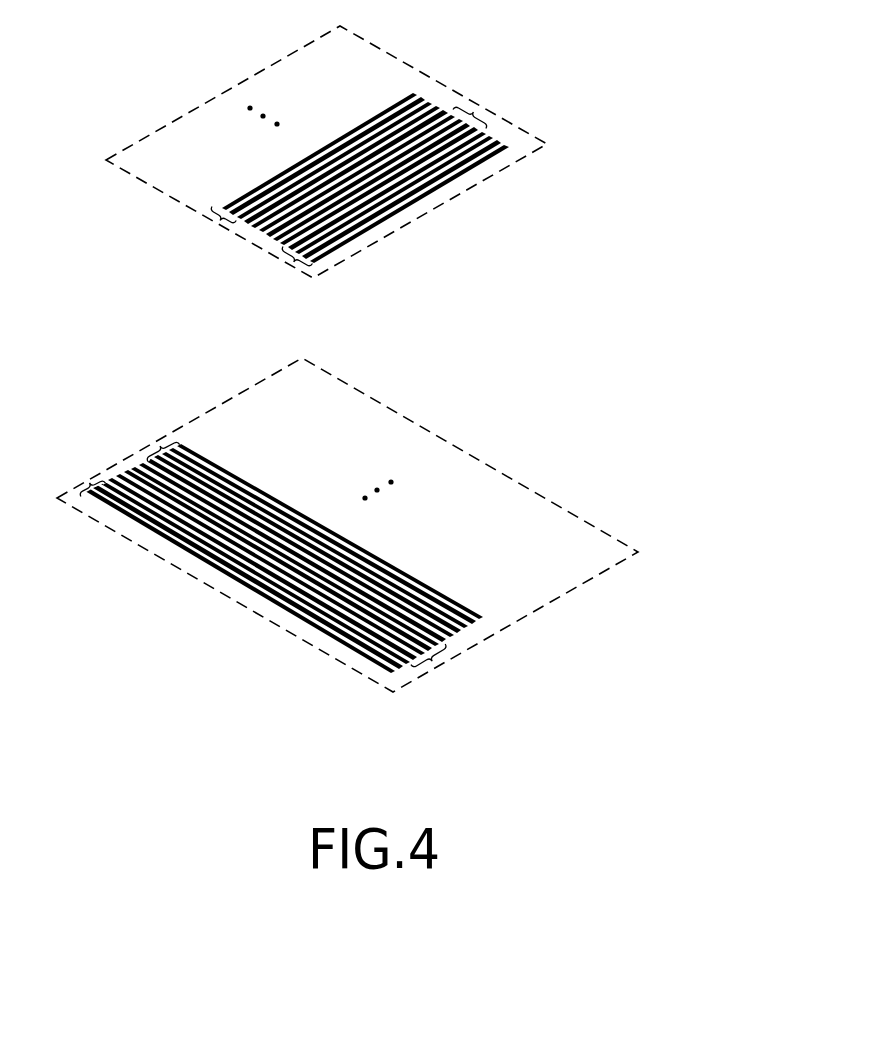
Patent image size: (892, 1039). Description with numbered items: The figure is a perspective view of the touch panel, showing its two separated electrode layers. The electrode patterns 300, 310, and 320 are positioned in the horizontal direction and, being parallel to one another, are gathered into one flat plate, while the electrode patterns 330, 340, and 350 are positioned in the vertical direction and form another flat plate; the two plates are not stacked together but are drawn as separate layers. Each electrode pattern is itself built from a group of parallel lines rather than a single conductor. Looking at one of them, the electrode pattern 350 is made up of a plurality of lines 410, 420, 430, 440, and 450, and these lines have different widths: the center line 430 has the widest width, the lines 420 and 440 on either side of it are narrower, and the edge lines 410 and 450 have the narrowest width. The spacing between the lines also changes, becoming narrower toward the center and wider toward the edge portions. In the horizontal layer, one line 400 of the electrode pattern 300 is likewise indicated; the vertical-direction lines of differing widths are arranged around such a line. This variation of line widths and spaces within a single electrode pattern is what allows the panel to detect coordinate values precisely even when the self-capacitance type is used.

The electrode pattern 300 is at (160, 446).
The electrode pattern 310 is at (432, 661).
The electrode pattern 320 is at (90, 483).
The electrode pattern 330 is at (220, 221).
The electrode pattern 340 is at (474, 112).
The electrode pattern 350 is at (294, 262).
The line of the electrode pattern 400 is at (433, 586).
The line 410 is at (473, 157).
The line 420 is at (447, 180).
The center line 430 is at (415, 207).
The line 440 is at (373, 230).
The line 450 is at (342, 253).